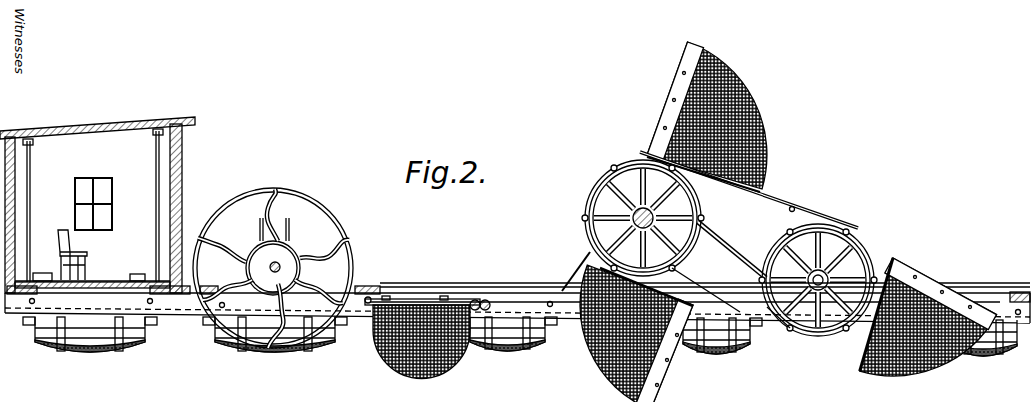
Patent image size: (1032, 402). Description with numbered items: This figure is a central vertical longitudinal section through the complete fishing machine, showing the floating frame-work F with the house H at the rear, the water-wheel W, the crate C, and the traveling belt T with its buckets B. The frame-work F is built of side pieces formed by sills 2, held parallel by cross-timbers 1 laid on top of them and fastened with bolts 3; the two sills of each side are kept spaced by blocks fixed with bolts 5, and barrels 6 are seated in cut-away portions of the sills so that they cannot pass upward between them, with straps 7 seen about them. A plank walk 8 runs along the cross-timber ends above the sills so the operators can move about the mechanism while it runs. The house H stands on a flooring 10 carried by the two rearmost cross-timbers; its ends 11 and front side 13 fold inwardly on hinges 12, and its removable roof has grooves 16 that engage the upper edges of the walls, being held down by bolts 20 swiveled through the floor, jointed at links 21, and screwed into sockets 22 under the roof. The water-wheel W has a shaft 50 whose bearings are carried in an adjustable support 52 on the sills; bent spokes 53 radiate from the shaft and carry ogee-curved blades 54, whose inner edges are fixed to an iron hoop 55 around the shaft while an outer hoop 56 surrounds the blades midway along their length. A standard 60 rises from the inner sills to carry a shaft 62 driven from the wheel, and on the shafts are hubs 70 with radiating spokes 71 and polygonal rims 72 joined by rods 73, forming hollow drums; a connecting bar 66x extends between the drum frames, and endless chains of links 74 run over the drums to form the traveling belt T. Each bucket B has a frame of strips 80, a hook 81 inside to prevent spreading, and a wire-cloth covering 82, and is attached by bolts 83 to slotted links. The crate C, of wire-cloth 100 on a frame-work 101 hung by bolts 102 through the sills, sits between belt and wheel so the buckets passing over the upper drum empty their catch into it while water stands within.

The cross-timbers 1 is at (175, 294).
The sills 2 is at (567, 316).
The bolts 3 is at (363, 286).
The bolts 5 is at (36, 301).
The barrels 6 is at (968, 362).
The float strap 7 is at (130, 352).
The plank walk 8 is at (705, 275).
The flooring 10 is at (92, 282).
The ends 11 is at (104, 209).
The hinges 12 is at (133, 275).
The front side 13 is at (183, 155).
The grooves 16 is at (92, 122).
The bolts 20 is at (29, 206).
The links 21 is at (41, 274).
The sockets 22 is at (33, 143).
The shaft 50 is at (284, 265).
The support 52 is at (290, 228).
The bent spokes 53 is at (232, 245).
The blades 54 is at (325, 256).
The hoop of iron 55 is at (306, 282).
The hoop 56 is at (334, 216).
The standard 60 is at (579, 261).
The shaft 62 is at (654, 218).
The connecting bar 66x is at (746, 258).
The hubs 70 is at (717, 257).
The spokes 71 is at (813, 343).
The polygonal rims 72 is at (690, 252).
The rods 73 is at (610, 169).
The links 74 is at (796, 210).
The strips of iron or steel 80 is at (670, 93).
The hook 81 is at (901, 268).
The exterior covering 82 is at (755, 116).
The bolts 83 is at (708, 181).
The wire-cloth 100 is at (420, 379).
The frame-work 101 is at (422, 300).
The bolts 102 is at (386, 298).
The water-wheel W is at (275, 262).
The crate C is at (420, 332).
The floating frame-work F is at (505, 298).
The traveling belt T is at (749, 190).
The buckets B is at (788, 222).
The house H is at (106, 204).